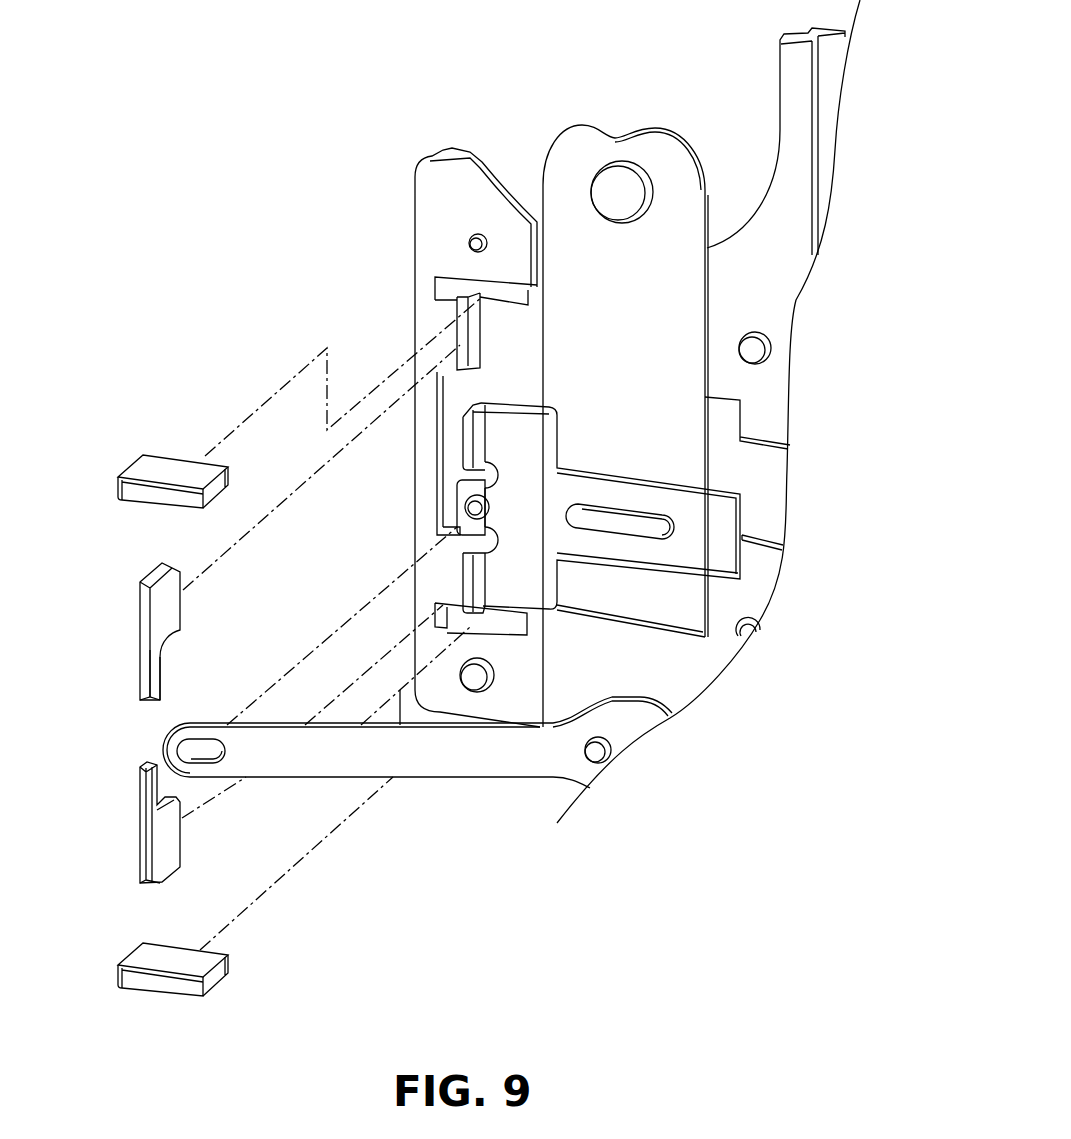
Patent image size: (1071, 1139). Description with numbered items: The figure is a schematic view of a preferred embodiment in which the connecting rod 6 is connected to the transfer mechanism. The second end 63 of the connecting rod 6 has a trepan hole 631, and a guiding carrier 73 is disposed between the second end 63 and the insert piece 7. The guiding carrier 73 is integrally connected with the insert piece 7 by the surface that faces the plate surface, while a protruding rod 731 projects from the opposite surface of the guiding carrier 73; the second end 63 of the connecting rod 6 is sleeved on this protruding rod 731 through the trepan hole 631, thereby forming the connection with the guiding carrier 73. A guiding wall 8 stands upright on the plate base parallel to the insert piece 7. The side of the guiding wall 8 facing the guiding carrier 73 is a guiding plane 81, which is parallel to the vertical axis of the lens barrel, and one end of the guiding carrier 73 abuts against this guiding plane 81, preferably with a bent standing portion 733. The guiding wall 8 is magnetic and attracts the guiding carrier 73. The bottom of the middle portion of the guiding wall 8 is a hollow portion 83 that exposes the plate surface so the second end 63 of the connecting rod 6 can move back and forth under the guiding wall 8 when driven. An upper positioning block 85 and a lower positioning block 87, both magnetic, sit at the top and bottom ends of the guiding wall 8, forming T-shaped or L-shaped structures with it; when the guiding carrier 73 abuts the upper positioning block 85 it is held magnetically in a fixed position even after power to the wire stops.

The connecting rod 6 is at (441, 758).
The second end 63 is at (200, 771).
The trepan hole 631 is at (195, 743).
The insert piece 7 is at (676, 120).
The guiding carrier 73 is at (602, 508).
The protruding rod 731 is at (466, 507).
The standing portion 733 is at (468, 447).
The guiding wall 8 is at (171, 723).
The guiding plane 81 is at (173, 612).
The hollow portion 83 is at (172, 653).
The upper positioning block 85 is at (148, 468).
The lower positioning block 87 is at (148, 957).